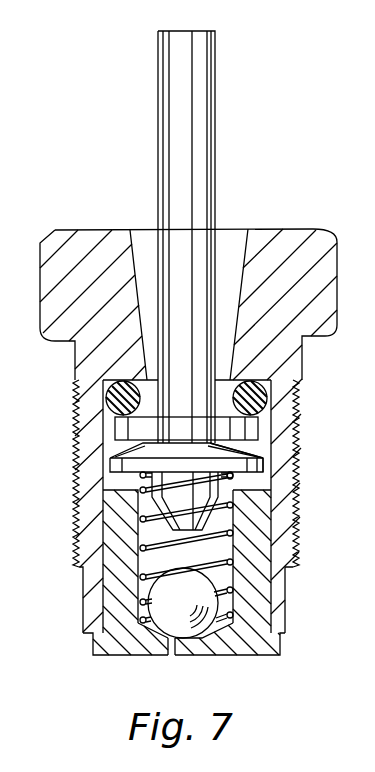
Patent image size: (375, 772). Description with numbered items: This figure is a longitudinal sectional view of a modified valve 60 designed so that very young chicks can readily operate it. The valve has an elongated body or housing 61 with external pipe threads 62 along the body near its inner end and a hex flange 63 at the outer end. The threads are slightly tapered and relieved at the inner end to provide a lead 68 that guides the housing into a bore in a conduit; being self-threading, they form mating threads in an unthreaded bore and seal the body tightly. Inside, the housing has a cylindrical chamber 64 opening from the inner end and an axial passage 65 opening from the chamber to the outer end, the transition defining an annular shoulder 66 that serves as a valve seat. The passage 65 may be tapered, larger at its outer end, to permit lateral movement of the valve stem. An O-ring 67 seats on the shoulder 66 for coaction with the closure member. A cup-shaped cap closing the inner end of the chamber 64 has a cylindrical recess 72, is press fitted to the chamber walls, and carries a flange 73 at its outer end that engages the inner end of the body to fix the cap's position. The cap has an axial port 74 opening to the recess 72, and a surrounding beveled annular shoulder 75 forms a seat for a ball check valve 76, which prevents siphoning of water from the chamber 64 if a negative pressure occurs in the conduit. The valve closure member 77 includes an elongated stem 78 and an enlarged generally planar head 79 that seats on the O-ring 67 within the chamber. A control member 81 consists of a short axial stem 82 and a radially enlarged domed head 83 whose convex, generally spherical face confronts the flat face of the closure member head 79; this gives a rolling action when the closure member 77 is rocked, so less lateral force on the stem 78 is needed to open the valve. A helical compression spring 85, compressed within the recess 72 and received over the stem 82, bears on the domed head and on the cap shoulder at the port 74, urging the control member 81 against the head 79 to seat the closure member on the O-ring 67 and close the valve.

The valve 60 is at (186, 387).
The body or housing 61 is at (88, 362).
The external pipe threads 62 is at (296, 513).
The hex flange 63 is at (53, 263).
The cylindrical chamber 64 is at (105, 482).
The axial passage 65 is at (137, 248).
The annular shoulder 66 is at (238, 383).
The O-ring 67 is at (268, 396).
The lead 68 is at (88, 594).
The cylindrical recess 72 is at (147, 563).
The flange 73 is at (93, 645).
The axial port 74 is at (180, 640).
The beveled annular shoulder 75 is at (210, 626).
The ball check valve 76 is at (196, 607).
The valve closure member 77 is at (158, 72).
The stem 78 is at (207, 90).
The head 79 is at (128, 428).
The control member 81 is at (120, 446).
The axial stem 82 is at (200, 491).
The domed head 83 is at (263, 447).
The helical compression spring 85 is at (214, 557).